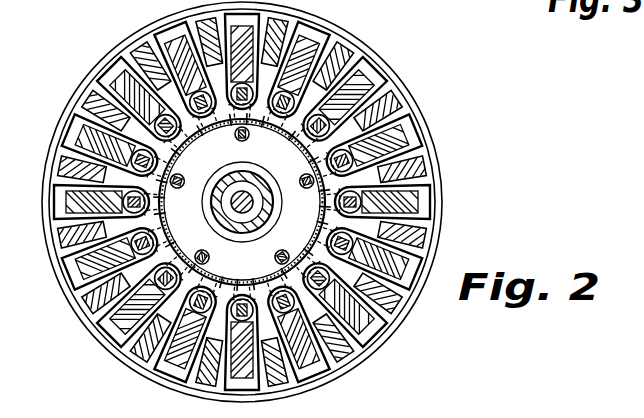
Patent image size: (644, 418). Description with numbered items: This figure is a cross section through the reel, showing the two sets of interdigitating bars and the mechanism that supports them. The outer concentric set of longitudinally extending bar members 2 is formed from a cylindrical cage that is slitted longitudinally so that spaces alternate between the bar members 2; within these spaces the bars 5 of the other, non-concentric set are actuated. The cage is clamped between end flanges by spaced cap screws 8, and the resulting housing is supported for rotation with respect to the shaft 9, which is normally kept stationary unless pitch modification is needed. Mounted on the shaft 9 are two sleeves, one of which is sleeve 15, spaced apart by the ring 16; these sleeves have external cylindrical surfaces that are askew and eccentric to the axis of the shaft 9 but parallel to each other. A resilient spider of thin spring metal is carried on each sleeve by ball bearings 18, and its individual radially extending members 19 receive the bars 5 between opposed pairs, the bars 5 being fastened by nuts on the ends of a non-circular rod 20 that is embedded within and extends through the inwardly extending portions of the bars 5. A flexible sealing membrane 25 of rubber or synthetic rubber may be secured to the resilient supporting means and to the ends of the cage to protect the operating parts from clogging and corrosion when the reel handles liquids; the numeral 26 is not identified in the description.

The bar members 2 is at (133, 62).
The bars 5 is at (170, 32).
The cap screws 8 is at (239, 133).
The shaft 9 is at (252, 201).
The sleeve 15 is at (237, 223).
The ring 16 is at (245, 222).
The ball bearings 18 is at (239, 165).
The radially extending members 19 is at (242, 202).
The non-circular rod 20 is at (152, 210).
The flexible sealing membrane 25 is at (353, 228).
The inner ring wall 26 is at (180, 252).